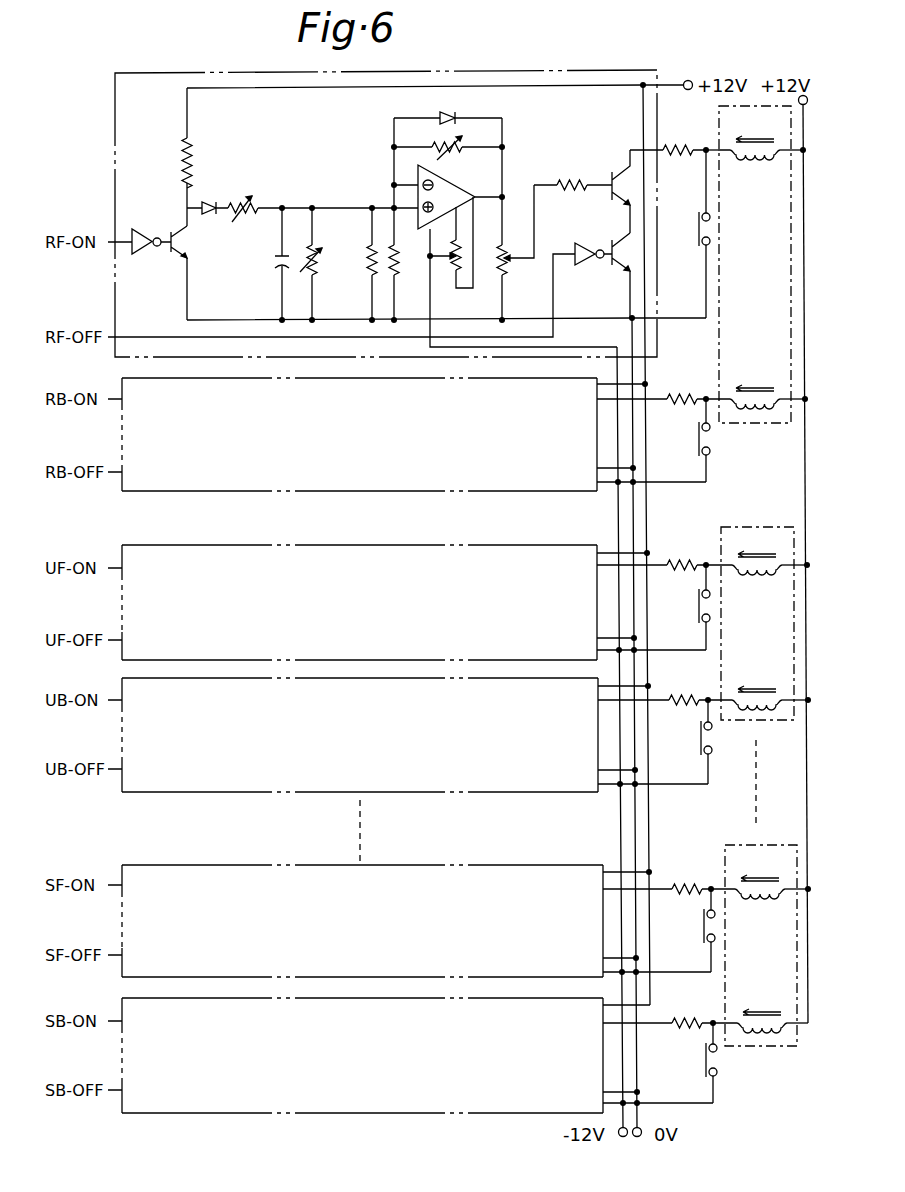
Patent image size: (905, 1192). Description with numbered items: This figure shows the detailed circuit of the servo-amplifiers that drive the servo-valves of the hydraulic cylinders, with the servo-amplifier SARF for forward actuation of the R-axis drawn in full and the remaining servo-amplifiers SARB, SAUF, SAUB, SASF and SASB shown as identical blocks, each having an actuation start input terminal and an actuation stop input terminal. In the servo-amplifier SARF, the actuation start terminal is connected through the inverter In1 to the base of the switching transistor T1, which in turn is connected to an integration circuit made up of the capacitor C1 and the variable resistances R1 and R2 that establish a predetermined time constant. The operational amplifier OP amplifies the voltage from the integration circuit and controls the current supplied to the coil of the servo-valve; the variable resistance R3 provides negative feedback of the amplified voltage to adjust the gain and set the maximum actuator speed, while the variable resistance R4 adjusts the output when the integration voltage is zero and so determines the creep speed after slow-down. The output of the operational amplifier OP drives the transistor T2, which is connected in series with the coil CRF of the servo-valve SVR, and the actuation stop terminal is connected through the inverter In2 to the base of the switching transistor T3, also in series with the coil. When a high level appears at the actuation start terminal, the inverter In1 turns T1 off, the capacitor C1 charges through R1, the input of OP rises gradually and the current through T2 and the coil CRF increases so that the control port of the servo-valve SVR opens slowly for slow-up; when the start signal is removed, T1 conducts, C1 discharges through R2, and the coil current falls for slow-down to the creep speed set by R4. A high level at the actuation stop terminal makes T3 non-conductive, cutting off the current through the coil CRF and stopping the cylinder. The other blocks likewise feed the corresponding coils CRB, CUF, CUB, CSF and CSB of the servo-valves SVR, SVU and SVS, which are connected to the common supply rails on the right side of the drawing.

The servo-amplifier SARF is at (490, 71).
The servo-amplifier SARB is at (498, 493).
The servo amplifier for UF SAUF is at (498, 545).
The servo-amplifier SAUB is at (493, 792).
The servo-amplifier SASF is at (490, 865).
The servo-amplifier SASB is at (493, 1113).
The switching transistor T1 is at (169, 234).
The transistor T2 is at (567, 205).
The switching transistor T3 is at (611, 269).
The inverter In1 is at (140, 256).
The inverter In2 is at (585, 266).
The variable resistance R1 is at (243, 201).
The variable resistance R2 is at (324, 264).
The variable resistance R3 is at (448, 144).
The variable resistance R4 is at (451, 242).
The capacitor C1 is at (267, 264).
The operational amplifier OP is at (461, 189).
The coil CRF is at (743, 139).
The solenoid coil RB CRB is at (749, 389).
The solenoid coil UF CUF is at (751, 557).
The solenoid coil UB CUB is at (751, 692).
The solenoid coil SF CSF is at (754, 880).
The solenoid coil SB CSB is at (756, 1013).
The servo-valve SVR is at (770, 423).
The servo valve U SVU is at (778, 720).
The servo valve S SVS is at (775, 1046).